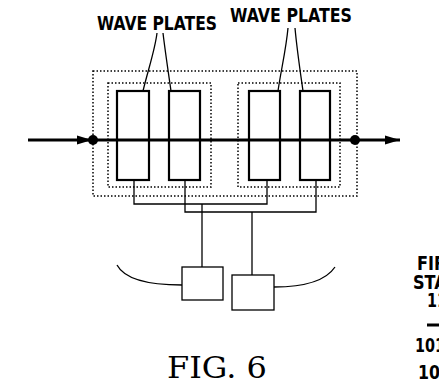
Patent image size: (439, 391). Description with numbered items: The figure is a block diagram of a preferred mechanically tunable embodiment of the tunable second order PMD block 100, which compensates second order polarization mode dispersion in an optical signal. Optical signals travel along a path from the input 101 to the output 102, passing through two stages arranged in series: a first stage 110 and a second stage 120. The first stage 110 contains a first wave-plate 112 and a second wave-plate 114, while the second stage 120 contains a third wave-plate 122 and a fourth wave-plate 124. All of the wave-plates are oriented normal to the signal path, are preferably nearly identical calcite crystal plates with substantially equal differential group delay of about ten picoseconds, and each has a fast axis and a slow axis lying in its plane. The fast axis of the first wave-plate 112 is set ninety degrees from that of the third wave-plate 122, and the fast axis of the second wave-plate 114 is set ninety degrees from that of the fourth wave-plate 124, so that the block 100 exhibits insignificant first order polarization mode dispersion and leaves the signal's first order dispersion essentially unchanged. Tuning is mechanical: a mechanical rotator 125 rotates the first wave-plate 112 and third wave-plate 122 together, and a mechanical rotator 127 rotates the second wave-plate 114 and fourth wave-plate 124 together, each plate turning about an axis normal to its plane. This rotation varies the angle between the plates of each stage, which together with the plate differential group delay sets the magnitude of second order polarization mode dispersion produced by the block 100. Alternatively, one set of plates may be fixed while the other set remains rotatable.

The tunable second order PMD block 100 is at (93, 188).
The input 101 is at (89, 148).
The output 102 is at (360, 144).
The first stage 110 is at (108, 97).
The first wave-plate 112 is at (137, 91).
The second wave-plate 114 is at (186, 91).
The second stage 120 is at (342, 96).
The third wave-plate 122 is at (269, 91).
The fourth wave-plate 124 is at (320, 91).
The mechanical rotator 125 is at (220, 294).
The mechanical rotator 127 is at (270, 303).